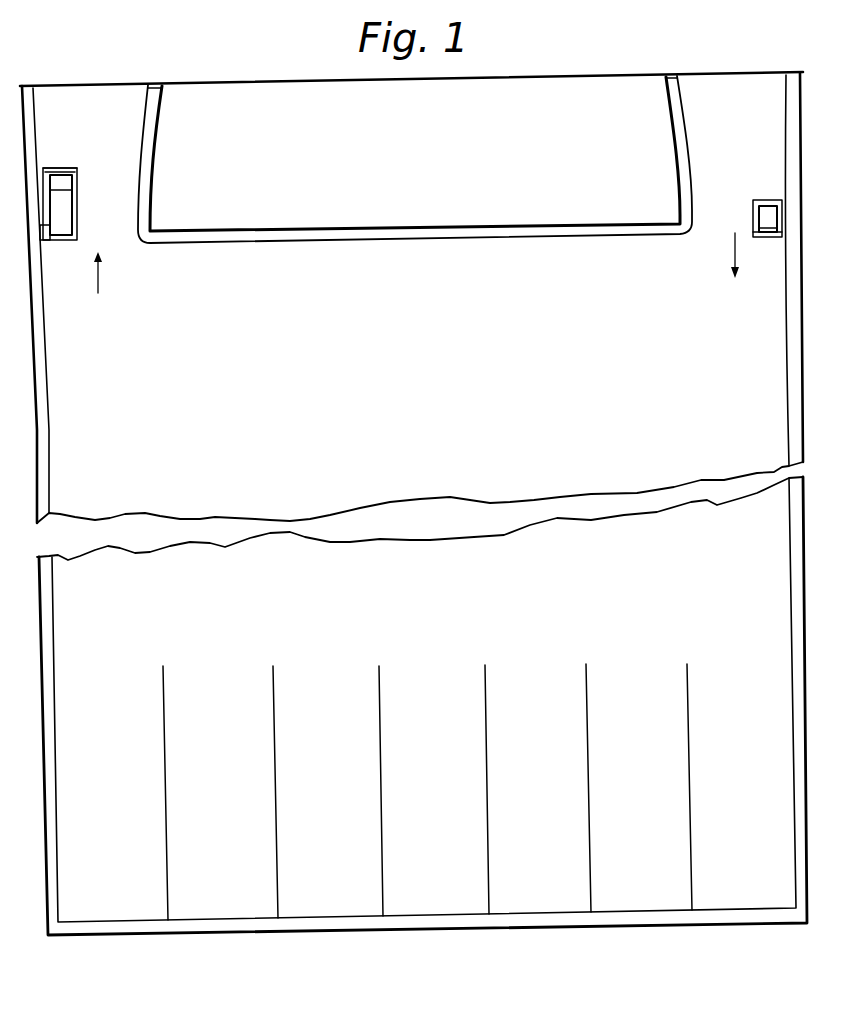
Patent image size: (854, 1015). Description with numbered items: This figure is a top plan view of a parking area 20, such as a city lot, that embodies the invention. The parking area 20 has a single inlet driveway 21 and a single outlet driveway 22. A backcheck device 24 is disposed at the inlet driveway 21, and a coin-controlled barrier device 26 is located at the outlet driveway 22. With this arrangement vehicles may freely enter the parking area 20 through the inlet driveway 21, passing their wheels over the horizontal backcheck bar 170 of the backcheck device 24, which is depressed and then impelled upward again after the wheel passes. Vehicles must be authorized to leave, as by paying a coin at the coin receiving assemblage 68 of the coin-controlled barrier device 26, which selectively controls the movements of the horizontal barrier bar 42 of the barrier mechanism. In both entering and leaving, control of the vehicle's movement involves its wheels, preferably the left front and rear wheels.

The parking area 20 is at (338, 893).
The inlet driveway 21 is at (731, 80).
The outlet driveway 22 is at (106, 108).
The backcheck device 24 is at (752, 191).
The coin-controlled barrier device 26 is at (85, 213).
The horizontal barrier bar 42 is at (57, 169).
The coin receiving assemblage 68 is at (46, 242).
The horizontal backcheck bar 170 is at (769, 241).